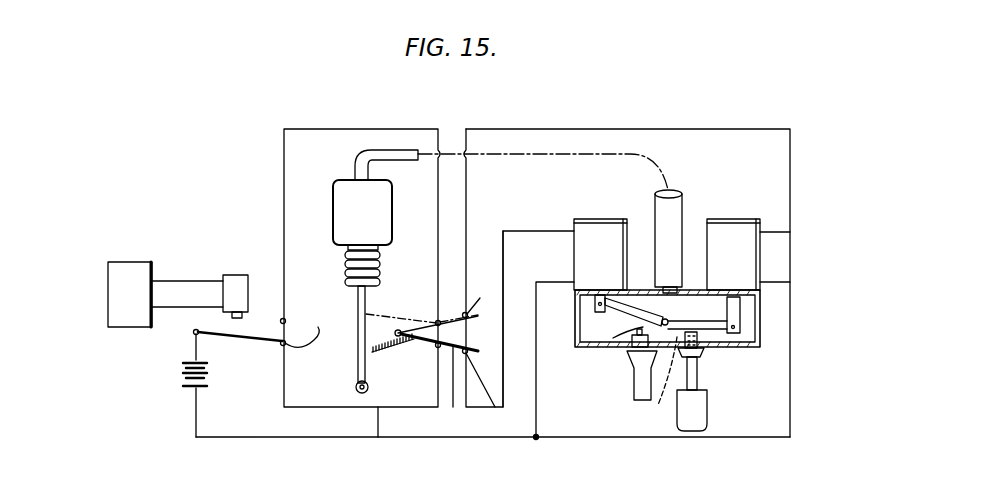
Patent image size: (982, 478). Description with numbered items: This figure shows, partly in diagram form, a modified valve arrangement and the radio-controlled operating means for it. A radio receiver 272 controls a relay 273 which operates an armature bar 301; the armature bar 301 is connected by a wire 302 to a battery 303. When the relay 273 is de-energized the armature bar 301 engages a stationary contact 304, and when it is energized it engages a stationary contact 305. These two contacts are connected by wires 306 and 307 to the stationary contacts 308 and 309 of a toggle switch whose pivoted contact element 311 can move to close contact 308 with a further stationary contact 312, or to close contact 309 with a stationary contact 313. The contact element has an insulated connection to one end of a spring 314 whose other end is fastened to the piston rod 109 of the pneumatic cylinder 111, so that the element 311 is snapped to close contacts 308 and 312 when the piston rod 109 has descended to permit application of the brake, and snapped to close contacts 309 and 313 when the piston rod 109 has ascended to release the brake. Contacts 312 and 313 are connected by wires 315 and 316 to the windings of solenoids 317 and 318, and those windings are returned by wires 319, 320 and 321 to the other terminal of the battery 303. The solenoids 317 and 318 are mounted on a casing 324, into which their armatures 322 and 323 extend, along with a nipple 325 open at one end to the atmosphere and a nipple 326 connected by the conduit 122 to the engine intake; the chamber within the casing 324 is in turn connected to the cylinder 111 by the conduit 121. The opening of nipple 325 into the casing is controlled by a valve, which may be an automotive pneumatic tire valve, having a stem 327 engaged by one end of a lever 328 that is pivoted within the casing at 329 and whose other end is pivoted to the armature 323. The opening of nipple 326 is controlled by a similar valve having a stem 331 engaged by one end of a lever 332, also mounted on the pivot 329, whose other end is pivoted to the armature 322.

The pneumatic cylinder 111 is at (363, 233).
The conduit 121 is at (393, 152).
The conduit 122 is at (705, 408).
The piston rod 109 is at (360, 318).
The radio receiver 272 is at (133, 280).
The relay 273 is at (235, 288).
The armature bar 301 is at (257, 342).
The wire 302 is at (194, 349).
The battery 303 is at (185, 378).
The stationary contact 304 is at (315, 324).
The stationary contact 305 is at (286, 318).
The wire 306 is at (378, 441).
The wire 307 is at (338, 128).
The stationary contact 308 is at (437, 347).
The stationary contact 309 is at (436, 320).
The pivoted contact element 311 is at (453, 393).
The stationary contact 312 is at (493, 397).
The stationary contact 313 is at (480, 298).
The spring 314 is at (381, 352).
The wire 315 is at (510, 231).
The wire 316 is at (724, 128).
The solenoid 317 is at (603, 254).
The solenoid 318 is at (736, 254).
The wire 319 is at (567, 417).
The wire 320 is at (750, 437).
The wire 321 is at (300, 437).
The armature 322 is at (593, 303).
The armature 323 is at (732, 312).
The casing 324 is at (618, 348).
The nipple 325 is at (640, 383).
The nipple 326 is at (702, 360).
The stem 327 is at (627, 324).
The lever 328 is at (713, 327).
The pivot 329 is at (667, 319).
The stem 331 is at (663, 387).
The lever 332 is at (620, 311).